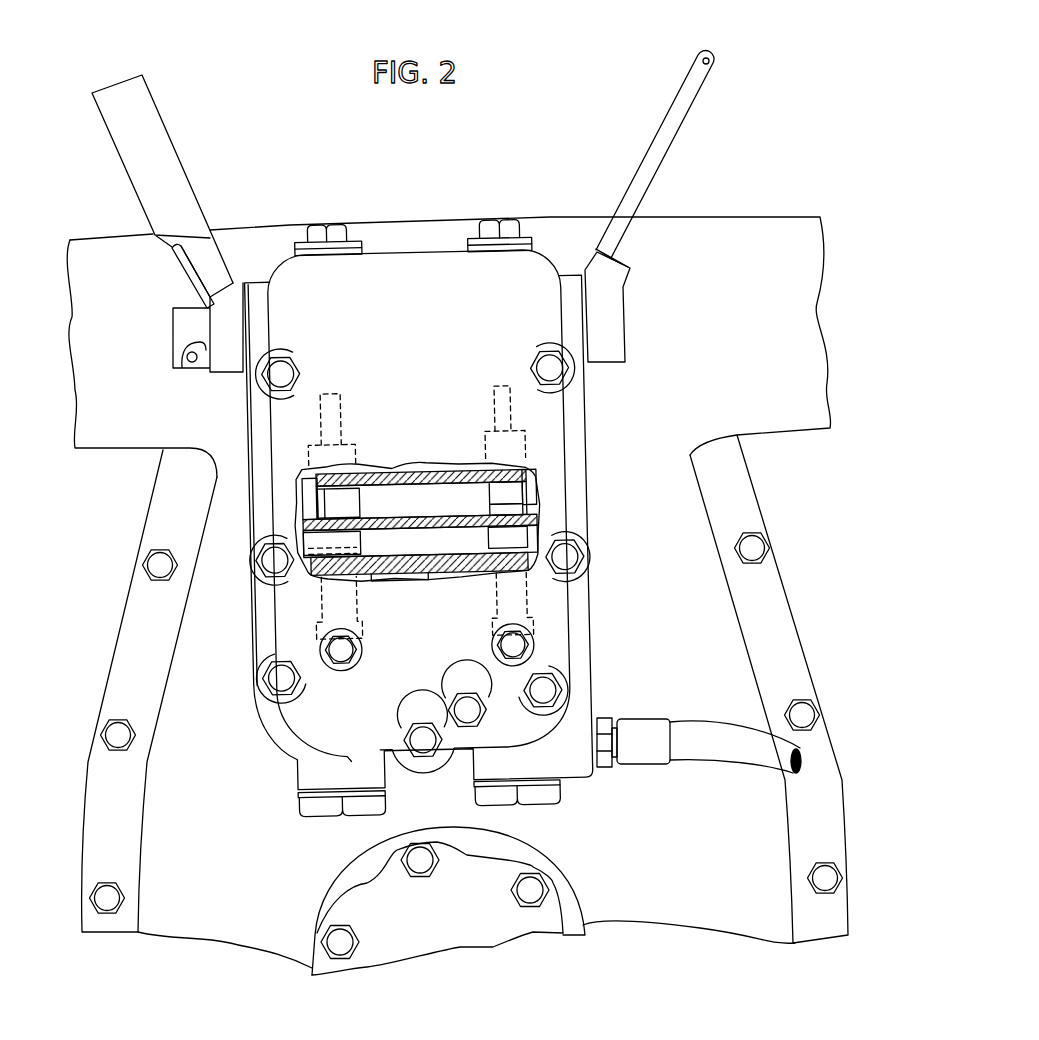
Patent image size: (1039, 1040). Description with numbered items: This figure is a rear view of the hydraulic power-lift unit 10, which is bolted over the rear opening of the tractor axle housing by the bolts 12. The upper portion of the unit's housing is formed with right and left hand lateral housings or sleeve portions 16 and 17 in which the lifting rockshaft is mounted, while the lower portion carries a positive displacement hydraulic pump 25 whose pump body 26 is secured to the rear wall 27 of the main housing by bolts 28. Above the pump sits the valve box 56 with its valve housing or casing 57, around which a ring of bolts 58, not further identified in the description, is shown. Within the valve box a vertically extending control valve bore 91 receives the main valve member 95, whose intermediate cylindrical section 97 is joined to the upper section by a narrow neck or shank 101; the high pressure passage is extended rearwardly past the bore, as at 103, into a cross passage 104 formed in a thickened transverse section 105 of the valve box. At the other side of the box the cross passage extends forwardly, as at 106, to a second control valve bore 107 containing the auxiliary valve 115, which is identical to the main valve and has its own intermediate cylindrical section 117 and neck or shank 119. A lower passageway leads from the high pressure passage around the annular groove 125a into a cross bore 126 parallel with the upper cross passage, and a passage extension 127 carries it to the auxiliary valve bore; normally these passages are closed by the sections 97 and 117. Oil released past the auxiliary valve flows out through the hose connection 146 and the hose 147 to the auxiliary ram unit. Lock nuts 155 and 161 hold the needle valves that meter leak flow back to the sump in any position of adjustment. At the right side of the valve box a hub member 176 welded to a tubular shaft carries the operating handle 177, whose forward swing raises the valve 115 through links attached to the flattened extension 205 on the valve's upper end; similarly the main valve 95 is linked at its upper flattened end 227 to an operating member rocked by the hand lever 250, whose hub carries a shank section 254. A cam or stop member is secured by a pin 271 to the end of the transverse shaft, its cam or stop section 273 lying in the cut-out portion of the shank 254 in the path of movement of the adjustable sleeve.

The unit 10 is at (178, 638).
The bolts 12 is at (150, 562).
The right hand lateral housing or sleeve portion 16 is at (721, 230).
The left hand lateral housing or sleeve portion 17 is at (90, 248).
The hydraulic pump 25 is at (576, 905).
The pump housing or pump body 26 is at (487, 877).
The rear wall 27 is at (233, 920).
The bolts 28 is at (418, 868).
The valve box 56 is at (550, 429).
The valve housing 57 is at (580, 511).
The housing bolts 58 is at (278, 381).
The control valve bore 91 is at (344, 466).
The valve member 95 is at (318, 438).
The intermediate cylindrical section 97 is at (321, 548).
The neck or shank 101 is at (313, 478).
The rearward extension of high pressure passage 103 is at (352, 508).
The cross passage 104 is at (413, 492).
The thickened transverse section 105 is at (385, 473).
The forward extension of cross passage 106 is at (512, 479).
The second control valve bore 107 is at (501, 577).
The second control valve 115 is at (492, 424).
The intermediate cylindrical section 117 is at (500, 508).
The neck or shank 119 is at (505, 486).
The annular groove 125a is at (364, 574).
The cross bore 126 is at (425, 550).
The passage extension 127 is at (489, 538).
The hose connection 146 is at (638, 730).
The hose 147 is at (722, 750).
The lock nut 155 is at (510, 652).
The lock nut 161 is at (348, 655).
The hub member 176 is at (612, 318).
The operating handle 177 is at (660, 147).
The flattened extension 205 is at (497, 407).
The upper flattened end 227 is at (344, 405).
The hand lever 250 is at (186, 163).
The shank section 254 is at (212, 266).
The pin 271 is at (191, 361).
The cam or stop section 273 is at (187, 285).